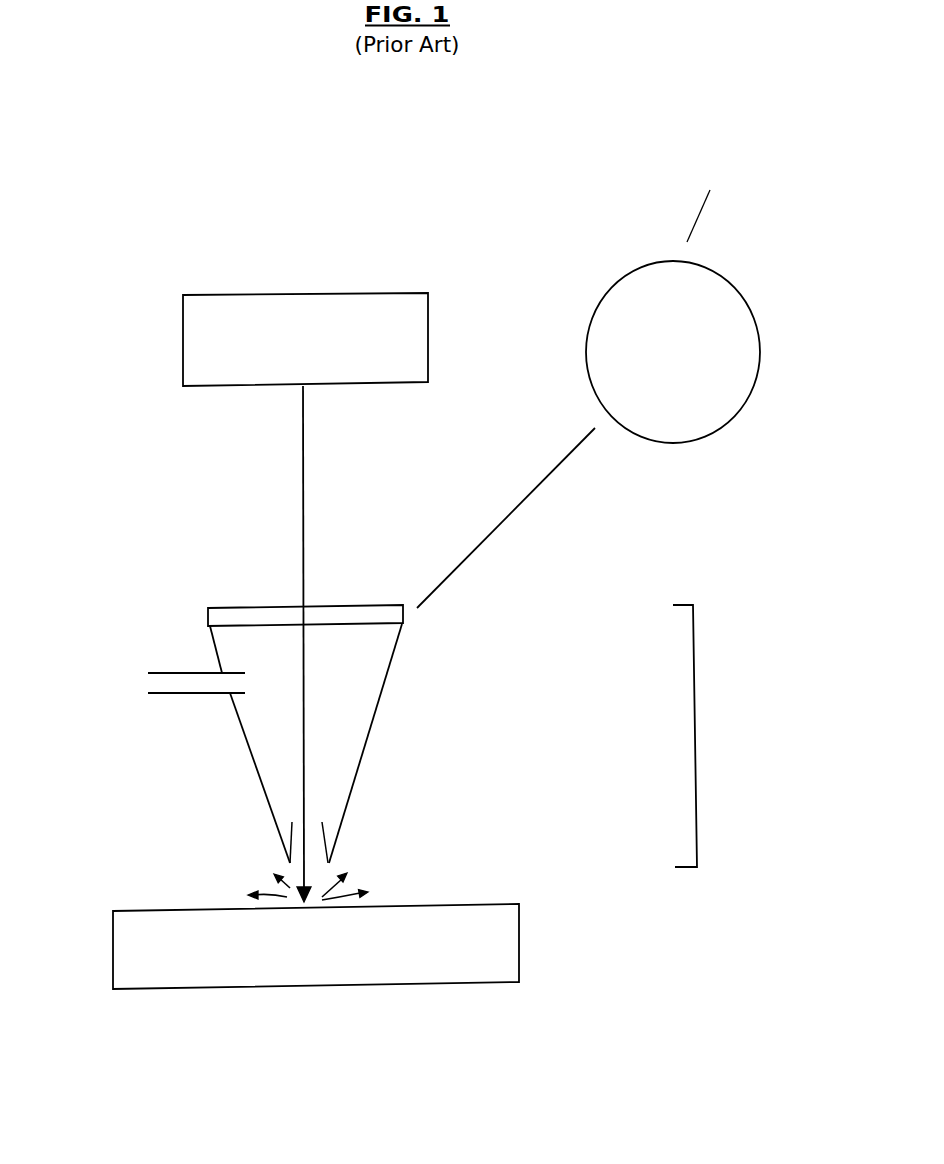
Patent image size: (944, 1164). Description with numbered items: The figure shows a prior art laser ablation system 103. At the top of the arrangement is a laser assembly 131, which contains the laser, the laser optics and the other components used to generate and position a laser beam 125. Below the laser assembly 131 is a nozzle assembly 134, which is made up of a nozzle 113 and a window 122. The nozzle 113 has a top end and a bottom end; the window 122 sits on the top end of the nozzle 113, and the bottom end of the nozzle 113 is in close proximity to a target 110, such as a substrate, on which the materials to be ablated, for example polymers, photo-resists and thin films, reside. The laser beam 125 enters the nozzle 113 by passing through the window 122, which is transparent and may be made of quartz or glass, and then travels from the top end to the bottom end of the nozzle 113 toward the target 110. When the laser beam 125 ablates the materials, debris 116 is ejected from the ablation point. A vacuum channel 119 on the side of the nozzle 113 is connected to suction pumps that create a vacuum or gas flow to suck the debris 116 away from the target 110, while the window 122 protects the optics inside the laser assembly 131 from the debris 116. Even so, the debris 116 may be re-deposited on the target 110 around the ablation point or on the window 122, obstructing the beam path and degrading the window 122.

The laser ablation system 103 is at (463, 1147).
The laser assembly 131 is at (285, 364).
The laser beam 125 is at (318, 497).
The nozzle assembly 134 is at (828, 745).
The window 122 is at (188, 608).
The nozzle 113 is at (532, 738).
The vacuum channel 119 is at (190, 683).
The debris 116 is at (425, 868).
The target 110 is at (336, 972).